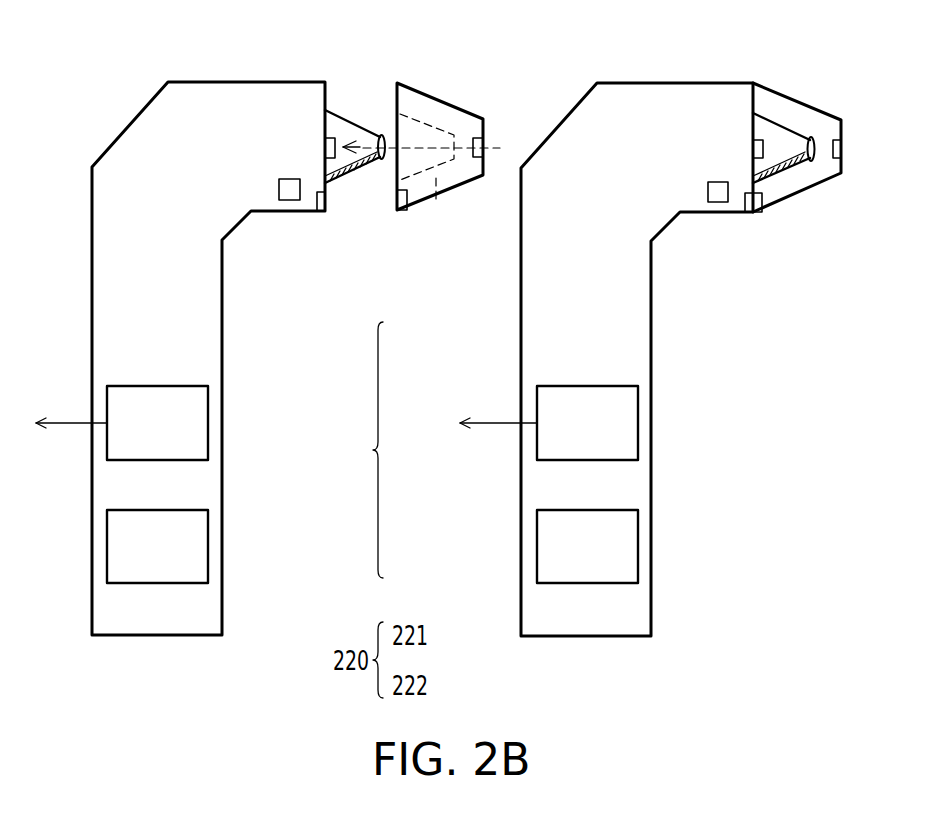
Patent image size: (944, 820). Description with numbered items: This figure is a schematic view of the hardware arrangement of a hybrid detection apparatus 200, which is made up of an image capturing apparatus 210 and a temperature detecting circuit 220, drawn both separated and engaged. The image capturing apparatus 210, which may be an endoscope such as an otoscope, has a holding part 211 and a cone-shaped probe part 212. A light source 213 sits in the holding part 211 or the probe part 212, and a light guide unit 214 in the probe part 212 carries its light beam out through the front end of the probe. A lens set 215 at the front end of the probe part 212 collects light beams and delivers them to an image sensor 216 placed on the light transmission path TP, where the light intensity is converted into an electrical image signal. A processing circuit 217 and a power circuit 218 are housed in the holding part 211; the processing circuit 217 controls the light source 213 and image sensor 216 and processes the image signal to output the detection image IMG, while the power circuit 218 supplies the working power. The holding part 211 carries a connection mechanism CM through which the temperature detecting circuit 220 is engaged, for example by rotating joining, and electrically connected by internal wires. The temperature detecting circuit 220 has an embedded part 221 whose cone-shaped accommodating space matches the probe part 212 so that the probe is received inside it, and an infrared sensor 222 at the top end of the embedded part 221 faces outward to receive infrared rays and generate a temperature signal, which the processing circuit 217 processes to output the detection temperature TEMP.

The hybrid detection apparatus 200 is at (812, 703).
The image capturing apparatus 210 is at (380, 450).
The holding part 211 is at (220, 110).
The probe part 212 is at (352, 128).
The light source 213 is at (290, 201).
The light guide unit 214 is at (352, 172).
The lens set 215 is at (383, 135).
The image sensor 216 is at (324, 147).
The processing circuit 217 is at (208, 425).
The power circuit 218 is at (208, 548).
The temperature detecting circuit 220 is at (615, 128).
The embedded part 221 is at (448, 120).
The infrared sensor 222 is at (483, 160).
The connection mechanism CM is at (320, 212).
The light transmission path TP is at (436, 195).
The detection image IMG is at (71, 412).
The detection temperature TEMP is at (498, 411).